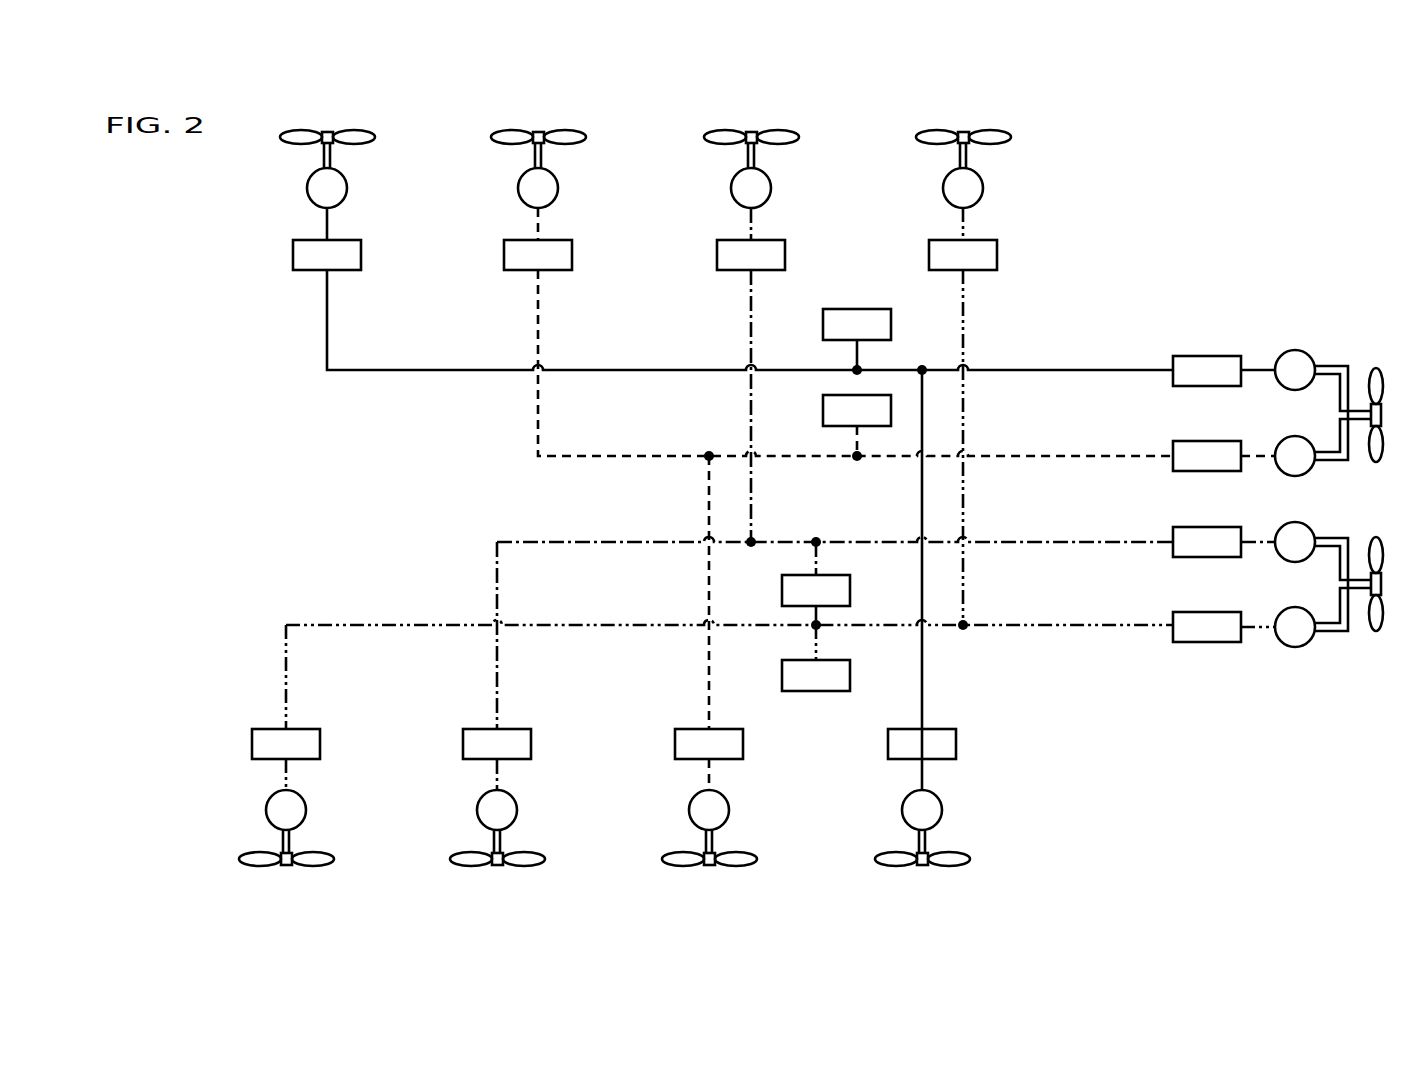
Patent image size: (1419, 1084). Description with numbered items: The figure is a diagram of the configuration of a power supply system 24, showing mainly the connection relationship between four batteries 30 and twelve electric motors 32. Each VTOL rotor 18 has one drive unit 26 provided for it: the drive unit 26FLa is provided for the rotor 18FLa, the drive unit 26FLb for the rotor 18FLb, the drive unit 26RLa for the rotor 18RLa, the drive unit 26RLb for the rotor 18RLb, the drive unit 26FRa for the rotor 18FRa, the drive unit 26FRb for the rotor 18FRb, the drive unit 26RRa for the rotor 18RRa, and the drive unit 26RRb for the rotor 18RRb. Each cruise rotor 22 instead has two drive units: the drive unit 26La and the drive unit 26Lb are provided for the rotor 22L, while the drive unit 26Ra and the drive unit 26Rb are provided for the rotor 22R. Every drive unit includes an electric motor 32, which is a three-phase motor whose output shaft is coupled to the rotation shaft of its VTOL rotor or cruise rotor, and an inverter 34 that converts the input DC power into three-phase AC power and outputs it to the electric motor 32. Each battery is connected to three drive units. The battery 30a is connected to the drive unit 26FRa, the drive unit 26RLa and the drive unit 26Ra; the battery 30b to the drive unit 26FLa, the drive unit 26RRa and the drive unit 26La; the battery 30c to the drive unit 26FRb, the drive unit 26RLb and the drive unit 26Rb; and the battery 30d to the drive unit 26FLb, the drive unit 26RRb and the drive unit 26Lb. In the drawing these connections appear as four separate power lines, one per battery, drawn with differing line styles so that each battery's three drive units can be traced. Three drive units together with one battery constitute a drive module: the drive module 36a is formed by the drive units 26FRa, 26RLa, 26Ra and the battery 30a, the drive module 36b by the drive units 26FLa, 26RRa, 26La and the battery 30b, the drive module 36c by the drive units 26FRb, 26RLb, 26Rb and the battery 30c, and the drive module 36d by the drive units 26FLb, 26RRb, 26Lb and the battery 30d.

The power supply system 24 is at (1232, 190).
The VTOL rotor 18 is at (661, 499).
The rotor 18FRa is at (332, 132).
The rotor 18FRb is at (544, 132).
The rotor 18RRa is at (968, 132).
The rotor 18RRb is at (756, 132).
The rotor 18FLa is at (289, 866).
The rotor 18FLb is at (500, 866).
The rotor 18RLa is at (925, 866).
The rotor 18RLb is at (712, 866).
The drive unit 26 is at (649, 502).
The drive unit 26FRa is at (284, 177).
The drive unit 26FRb is at (502, 177).
The drive unit 26RRa is at (929, 177).
The drive unit 26RRb is at (716, 177).
The drive unit 26FLa is at (253, 807).
The drive unit 26FLb is at (465, 807).
The drive unit 26RLa is at (890, 807).
The drive unit 26RLb is at (677, 807).
The drive unit 26Ra is at (1146, 408).
The drive unit 26Rb is at (1146, 493).
The drive unit 26La is at (1146, 663).
The drive unit 26Lb is at (1146, 578).
The electric motor 32 is at (348, 191).
The inverter 34 is at (362, 255).
The battery 30 is at (840, 496).
The battery 30a is at (857, 308).
The battery 30b is at (815, 692).
The battery 30c is at (822, 410).
The battery 30d is at (851, 591).
The drive module 36a is at (301, 373).
The drive module 36b is at (276, 617).
The drive module 36c is at (531, 465).
The drive module 36d is at (489, 528).
The cruise rotor 22 is at (1356, 498).
The rotor 22R is at (1376, 368).
The rotor 22L is at (1376, 632).